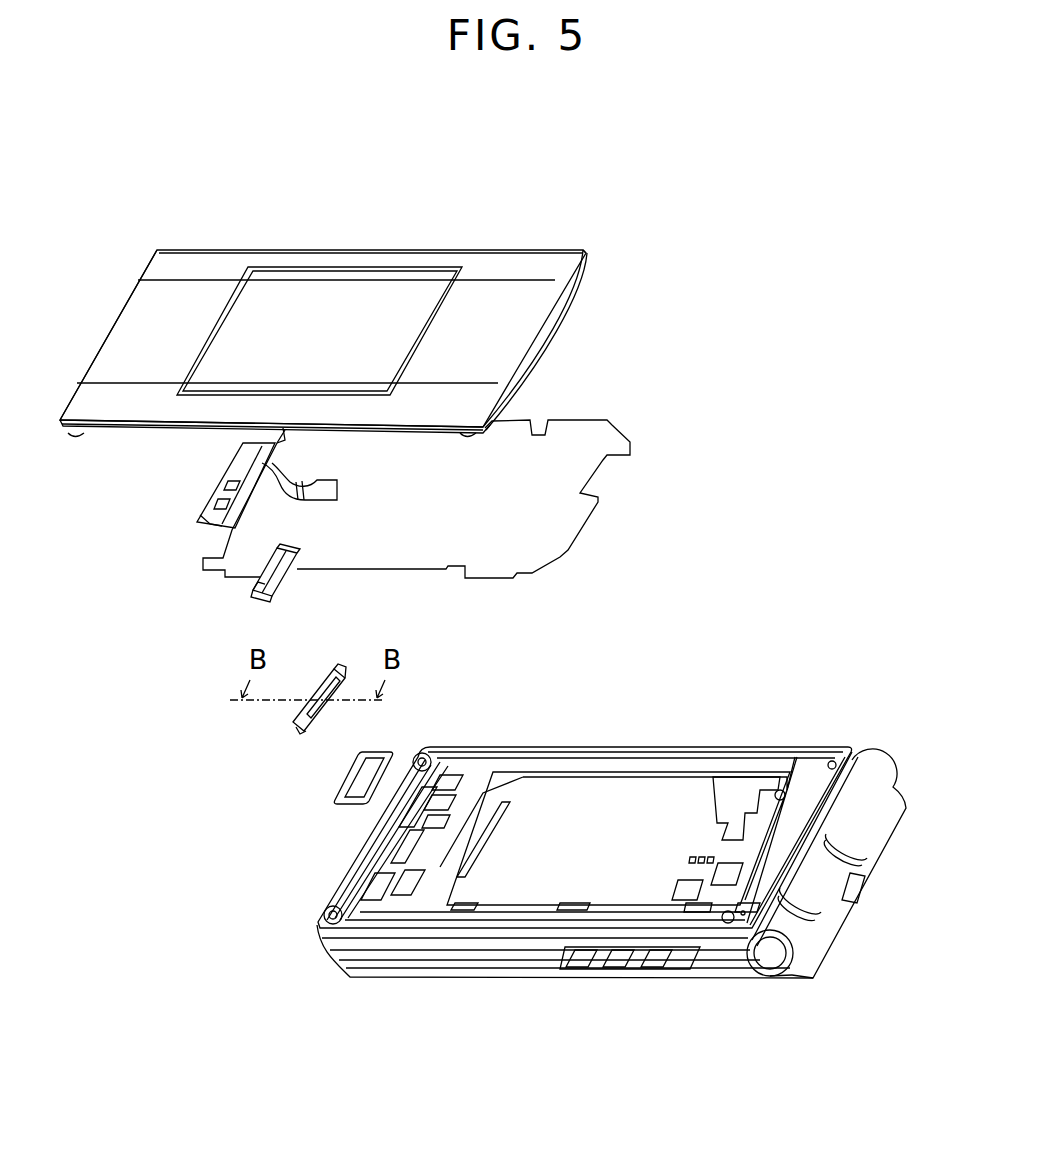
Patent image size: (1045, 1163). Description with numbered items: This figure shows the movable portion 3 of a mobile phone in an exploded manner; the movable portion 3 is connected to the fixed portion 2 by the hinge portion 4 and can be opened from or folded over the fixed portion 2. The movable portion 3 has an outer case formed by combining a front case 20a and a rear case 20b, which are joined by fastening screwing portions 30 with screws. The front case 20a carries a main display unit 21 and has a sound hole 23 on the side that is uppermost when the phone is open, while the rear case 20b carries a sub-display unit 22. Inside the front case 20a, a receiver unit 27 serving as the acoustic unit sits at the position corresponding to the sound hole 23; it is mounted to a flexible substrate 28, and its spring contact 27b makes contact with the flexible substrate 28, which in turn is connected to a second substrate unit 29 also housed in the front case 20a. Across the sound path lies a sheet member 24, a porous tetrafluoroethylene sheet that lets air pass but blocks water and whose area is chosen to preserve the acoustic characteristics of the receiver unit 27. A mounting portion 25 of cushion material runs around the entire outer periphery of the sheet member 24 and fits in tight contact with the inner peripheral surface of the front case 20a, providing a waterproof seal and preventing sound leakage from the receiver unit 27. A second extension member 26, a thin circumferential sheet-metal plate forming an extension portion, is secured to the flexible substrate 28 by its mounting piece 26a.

The fixed portion 2 is at (337, 958).
The movable portion 3 is at (317, 927).
The hinge portion 4 is at (772, 950).
The front case 20a is at (345, 933).
The rear case 20b is at (523, 265).
The main display unit 21 is at (608, 793).
The sub-display unit 22 is at (320, 297).
The sound hole 23 is at (407, 763).
The sheet member 24 is at (362, 773).
The mounting portion 25 is at (343, 792).
The second extension member 26 is at (292, 717).
The mounting piece 26a is at (310, 673).
The receiver unit 27 is at (248, 588).
The spring contact 27b is at (293, 553).
The flexible substrate 28 is at (210, 510).
The second substrate unit 29 is at (597, 440).
The screwing portions 30 is at (427, 747).